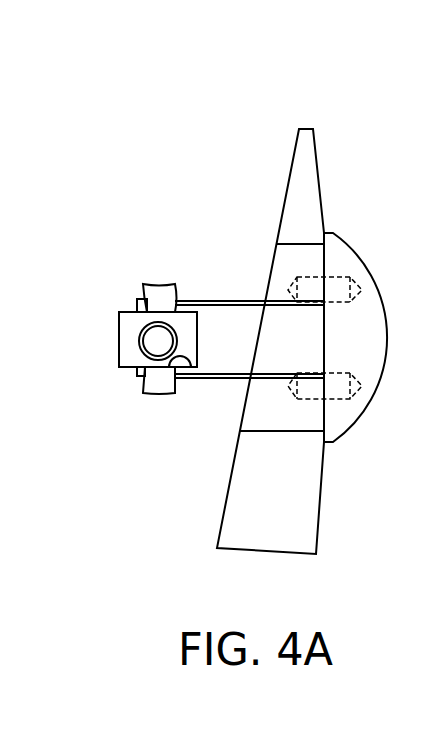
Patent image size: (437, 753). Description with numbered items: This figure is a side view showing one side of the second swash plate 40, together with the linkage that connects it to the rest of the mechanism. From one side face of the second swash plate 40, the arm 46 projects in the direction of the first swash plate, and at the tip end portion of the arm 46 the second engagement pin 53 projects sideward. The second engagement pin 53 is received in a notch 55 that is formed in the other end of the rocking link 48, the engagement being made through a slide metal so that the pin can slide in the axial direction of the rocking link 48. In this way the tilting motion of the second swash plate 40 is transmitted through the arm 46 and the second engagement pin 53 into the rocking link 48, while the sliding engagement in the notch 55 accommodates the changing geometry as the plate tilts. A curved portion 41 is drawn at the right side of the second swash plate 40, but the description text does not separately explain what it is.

The second swash plate 40 is at (329, 133).
The dome-shaped portion 41 is at (358, 423).
The arm 46 is at (227, 300).
The rocking link 48 is at (158, 283).
The second engagement pin 53 is at (150, 364).
The notch 55 is at (172, 380).